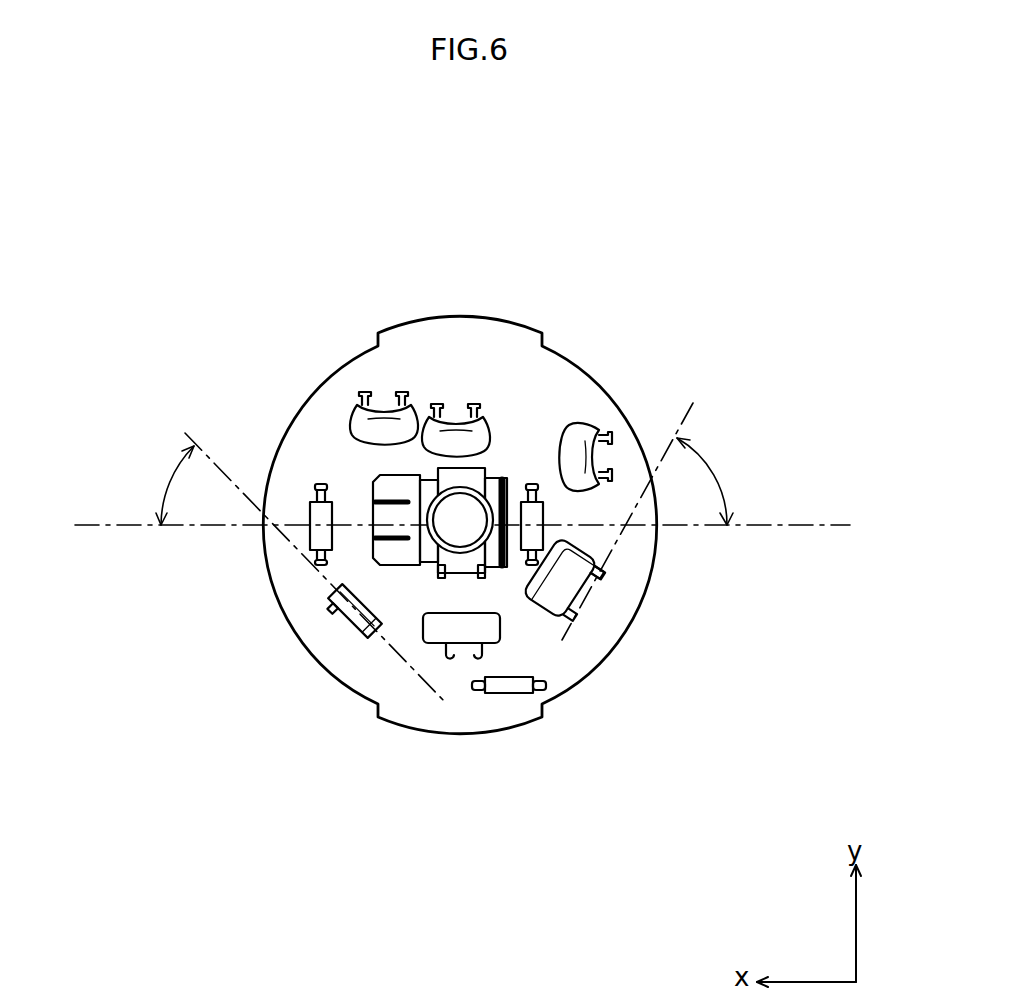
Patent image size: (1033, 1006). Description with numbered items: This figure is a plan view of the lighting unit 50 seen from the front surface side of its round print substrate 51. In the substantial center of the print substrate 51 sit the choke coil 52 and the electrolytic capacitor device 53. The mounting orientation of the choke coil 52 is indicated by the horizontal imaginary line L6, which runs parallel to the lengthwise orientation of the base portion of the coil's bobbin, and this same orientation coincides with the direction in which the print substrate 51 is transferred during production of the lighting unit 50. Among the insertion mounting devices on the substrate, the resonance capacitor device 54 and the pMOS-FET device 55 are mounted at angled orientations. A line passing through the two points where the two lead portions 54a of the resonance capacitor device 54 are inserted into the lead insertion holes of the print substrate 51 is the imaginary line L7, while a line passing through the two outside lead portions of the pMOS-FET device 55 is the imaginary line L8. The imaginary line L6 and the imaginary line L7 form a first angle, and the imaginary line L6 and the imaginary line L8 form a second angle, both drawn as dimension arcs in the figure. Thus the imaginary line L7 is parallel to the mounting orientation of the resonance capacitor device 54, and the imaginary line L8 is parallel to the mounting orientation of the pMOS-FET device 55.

The lighting unit 50 is at (545, 230).
The print substrate 51 is at (497, 718).
The choke coil 52 is at (370, 487).
The electrolytic capacitor device 53 is at (468, 508).
The resonance capacitor device 54 is at (560, 590).
The lead portions 54a is at (603, 572).
The pMOS-FET device 55 is at (332, 603).
The imaginary line L6 is at (797, 525).
The imaginary line L7 is at (690, 410).
The imaginary line L8 is at (405, 663).